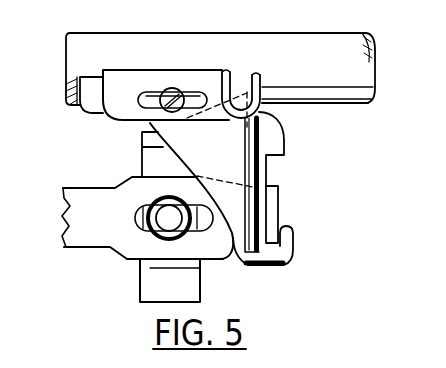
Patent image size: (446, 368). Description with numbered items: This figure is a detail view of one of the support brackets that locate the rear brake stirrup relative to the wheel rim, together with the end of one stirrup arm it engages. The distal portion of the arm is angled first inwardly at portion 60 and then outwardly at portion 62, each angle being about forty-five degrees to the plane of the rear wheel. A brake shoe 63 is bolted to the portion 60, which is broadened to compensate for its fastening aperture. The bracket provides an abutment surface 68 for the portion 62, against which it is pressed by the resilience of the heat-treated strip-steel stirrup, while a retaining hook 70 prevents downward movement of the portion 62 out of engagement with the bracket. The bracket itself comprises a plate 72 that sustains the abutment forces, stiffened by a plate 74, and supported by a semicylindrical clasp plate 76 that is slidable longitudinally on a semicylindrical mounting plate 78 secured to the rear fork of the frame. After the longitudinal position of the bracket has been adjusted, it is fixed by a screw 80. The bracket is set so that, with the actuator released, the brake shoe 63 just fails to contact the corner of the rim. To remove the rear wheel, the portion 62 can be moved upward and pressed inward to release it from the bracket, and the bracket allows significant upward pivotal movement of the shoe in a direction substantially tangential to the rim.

The inwardly angled portion 60 is at (129, 252).
The outwardly angled portion 62 is at (277, 208).
The brake shoe 63 is at (141, 153).
The abutment surface 68 is at (266, 170).
The retaining hook 70 is at (266, 265).
The plate 72 is at (180, 155).
The stiffening plate 74 is at (244, 148).
The semicylindrical clasp plate 76 is at (193, 72).
The semicylindrical mounting plate 78 is at (260, 78).
The screw 80 is at (170, 89).